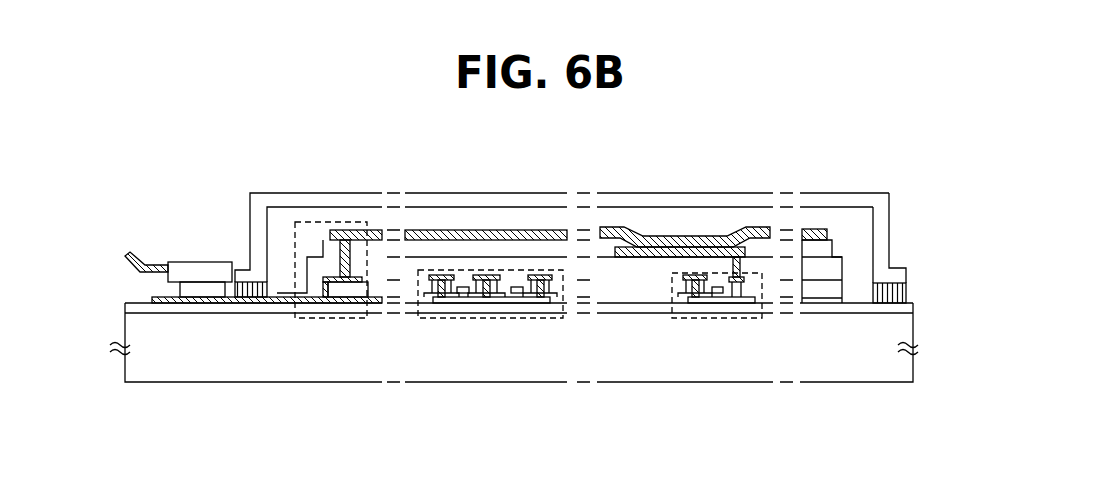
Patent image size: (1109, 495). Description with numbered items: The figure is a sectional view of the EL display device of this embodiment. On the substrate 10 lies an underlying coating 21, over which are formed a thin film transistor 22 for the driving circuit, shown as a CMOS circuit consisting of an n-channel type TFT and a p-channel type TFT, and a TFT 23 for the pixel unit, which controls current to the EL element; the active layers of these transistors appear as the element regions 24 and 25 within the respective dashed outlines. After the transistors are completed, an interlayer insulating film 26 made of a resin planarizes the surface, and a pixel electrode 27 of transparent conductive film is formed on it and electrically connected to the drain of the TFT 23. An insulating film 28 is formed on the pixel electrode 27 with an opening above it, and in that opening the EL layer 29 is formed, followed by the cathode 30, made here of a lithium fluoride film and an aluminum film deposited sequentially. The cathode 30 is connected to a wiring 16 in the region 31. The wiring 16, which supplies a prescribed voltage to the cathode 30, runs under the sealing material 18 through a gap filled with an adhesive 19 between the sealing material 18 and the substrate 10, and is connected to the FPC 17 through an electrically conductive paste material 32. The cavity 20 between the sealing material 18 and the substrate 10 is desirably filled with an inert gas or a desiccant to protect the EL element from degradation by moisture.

The substrate 10 is at (822, 384).
The wiring 16 is at (232, 286).
The FPC 17 is at (238, 245).
The sealing material 18 is at (282, 200).
The adhesive 19 is at (262, 300).
The cavity 20 is at (845, 228).
The underlying coating 21 is at (841, 306).
The thin film transistor for the driving circuit 22 is at (533, 318).
The TFT for the pixel unit 23 is at (752, 318).
The lower electrode 24 is at (479, 303).
The lower electrode 25 is at (705, 299).
The interlayer insulating film 26 is at (836, 272).
The pixel electrode 27 is at (650, 258).
The insulating film 28 is at (533, 247).
The EL layer 29 is at (724, 250).
The cathode 30 is at (647, 243).
The region 31 is at (333, 318).
The electrically conductive paste material 32 is at (212, 284).